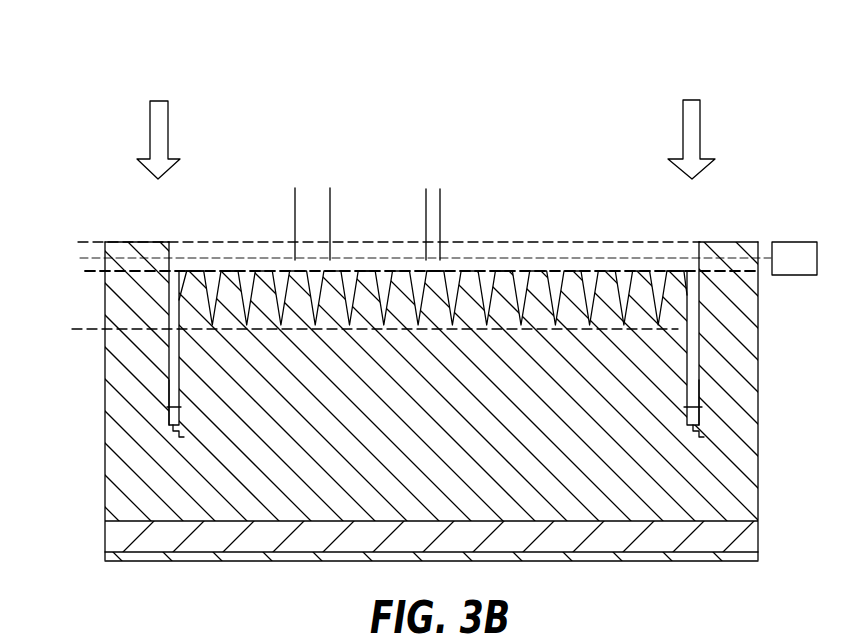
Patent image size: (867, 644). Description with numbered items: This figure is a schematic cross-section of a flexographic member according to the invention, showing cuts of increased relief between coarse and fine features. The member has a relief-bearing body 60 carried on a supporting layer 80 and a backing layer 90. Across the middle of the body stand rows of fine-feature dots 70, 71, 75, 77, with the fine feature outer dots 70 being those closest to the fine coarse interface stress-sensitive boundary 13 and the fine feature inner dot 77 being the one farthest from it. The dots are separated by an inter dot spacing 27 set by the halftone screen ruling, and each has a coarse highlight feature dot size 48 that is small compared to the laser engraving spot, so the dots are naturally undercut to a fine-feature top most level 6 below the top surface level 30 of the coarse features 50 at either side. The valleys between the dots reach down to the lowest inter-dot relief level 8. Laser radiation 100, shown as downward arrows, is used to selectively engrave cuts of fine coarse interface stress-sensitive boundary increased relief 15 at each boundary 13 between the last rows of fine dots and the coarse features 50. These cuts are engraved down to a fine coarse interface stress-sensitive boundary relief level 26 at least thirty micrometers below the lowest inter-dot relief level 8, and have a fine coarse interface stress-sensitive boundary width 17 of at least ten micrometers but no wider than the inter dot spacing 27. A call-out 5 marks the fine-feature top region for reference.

The enlarged view reference 5 is at (448, 258).
The fine-feature top most level 6 is at (414, 274).
The lowest inter-dot relief level 8 is at (365, 331).
The fine coarse interface stress-sensitive boundary 13 is at (169, 278).
The fine coarse interface stress-sensitive boundary increased relief 15 is at (172, 383).
The fine coarse interface stress-sensitive boundary width 17 is at (443, 446).
The fine coarse interface stress-sensitive boundary relief level 26 is at (185, 402).
The inter dot spacing 27 is at (312, 192).
The top surface plane 30 is at (373, 243).
The coarse highlight feature dot size 48 is at (435, 188).
The coarse features 50 is at (133, 243).
The substrate body 60 is at (105, 484).
The fine feature outer dots 70 is at (195, 271).
The fine features 71 is at (232, 271).
The fine features 75 is at (365, 271).
The fine feature inner dot 77 is at (437, 271).
The supporting layer 80 is at (105, 533).
The backing layer 90 is at (105, 557).
The laser radiation 100 is at (150, 100).